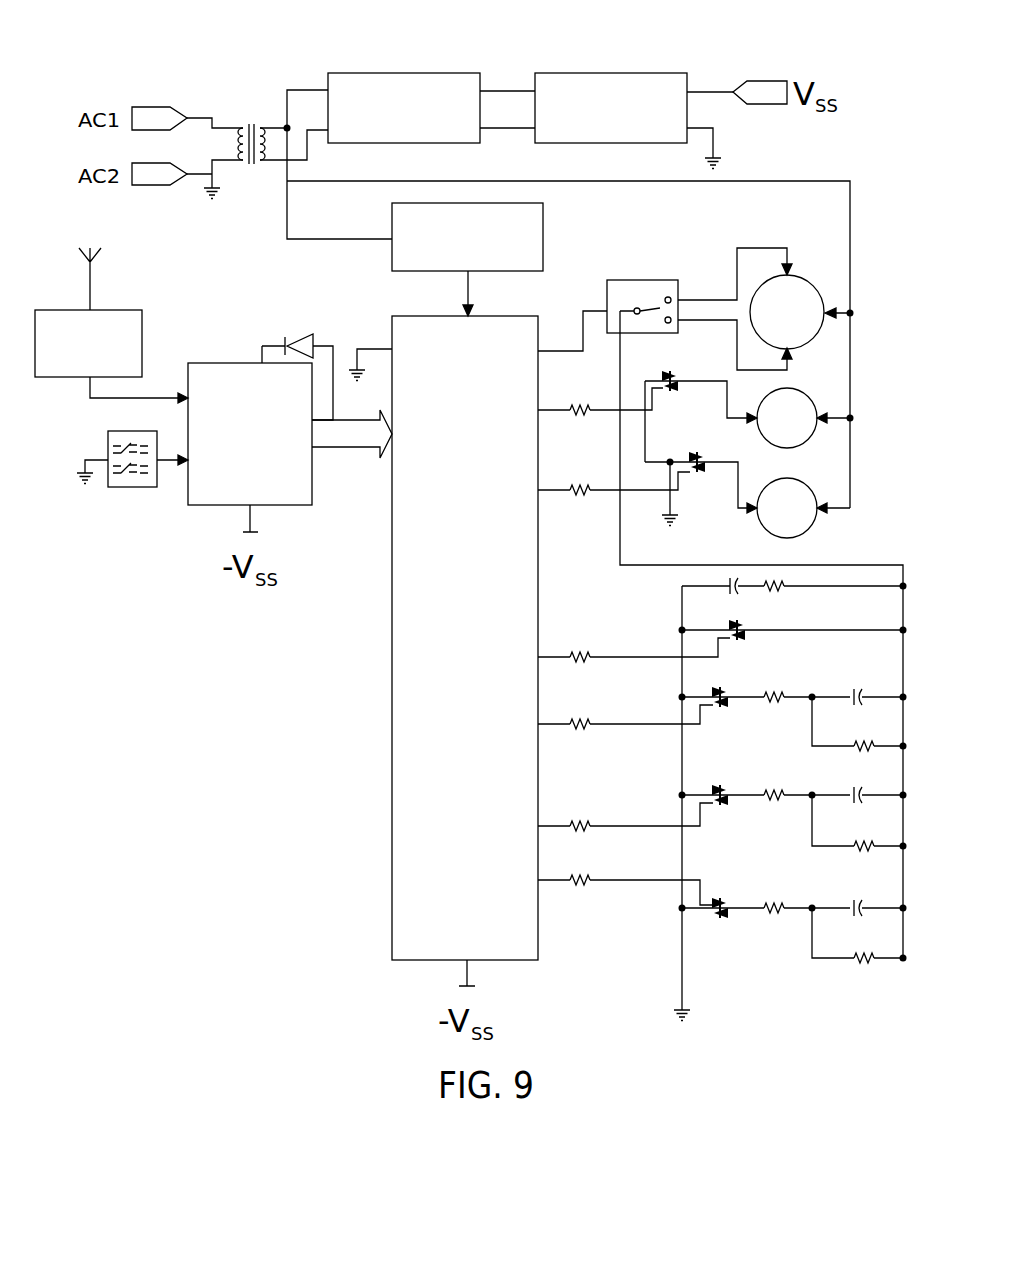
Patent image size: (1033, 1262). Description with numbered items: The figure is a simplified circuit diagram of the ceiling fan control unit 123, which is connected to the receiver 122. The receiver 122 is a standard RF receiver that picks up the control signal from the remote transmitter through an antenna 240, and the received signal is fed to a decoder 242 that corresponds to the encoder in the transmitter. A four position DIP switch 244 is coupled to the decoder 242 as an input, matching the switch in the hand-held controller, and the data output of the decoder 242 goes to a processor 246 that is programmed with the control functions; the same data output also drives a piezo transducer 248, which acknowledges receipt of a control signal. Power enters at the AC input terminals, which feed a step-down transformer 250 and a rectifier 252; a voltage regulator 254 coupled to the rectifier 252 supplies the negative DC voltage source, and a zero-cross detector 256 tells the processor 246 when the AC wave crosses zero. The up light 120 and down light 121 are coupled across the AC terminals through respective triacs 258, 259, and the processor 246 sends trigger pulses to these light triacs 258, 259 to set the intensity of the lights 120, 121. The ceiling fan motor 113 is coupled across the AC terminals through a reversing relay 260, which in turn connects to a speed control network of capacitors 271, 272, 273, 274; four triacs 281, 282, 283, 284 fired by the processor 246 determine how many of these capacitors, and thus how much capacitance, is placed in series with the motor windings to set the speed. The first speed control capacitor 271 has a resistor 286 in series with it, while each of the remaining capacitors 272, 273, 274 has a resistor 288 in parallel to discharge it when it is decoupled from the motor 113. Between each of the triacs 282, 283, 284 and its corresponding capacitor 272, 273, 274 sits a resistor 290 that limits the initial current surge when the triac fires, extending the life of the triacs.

The control unit 123 is at (755, 48).
The step-down transformer 250 is at (248, 128).
The rectifier 252 is at (373, 73).
The voltage regulator 254 is at (630, 73).
The zero-cross detector 256 is at (545, 226).
The antenna 240 is at (93, 283).
The receiver 122 is at (143, 337).
The piezo transducer 248 is at (303, 338).
The decoder 242 is at (303, 501).
The four position DIP switch 244 is at (130, 487).
The processor 246 is at (523, 950).
The reversing relay 260 is at (635, 280).
The ceiling fan motor 113 is at (810, 288).
The triac 258 is at (666, 374).
The triac 259 is at (712, 435).
The up light 120 is at (808, 395).
The down light 121 is at (803, 533).
The speed control capacitor 271 is at (737, 593).
The resistor 286 is at (790, 590).
The triac 281 is at (745, 638).
The triac 282 is at (724, 689).
The triac 283 is at (720, 788).
The triac 284 is at (722, 903).
The speed control capacitor 272 is at (860, 690).
The speed control capacitor 273 is at (860, 788).
The speed control capacitor 274 is at (863, 872).
The resistor 290 is at (776, 703).
The resistor 288 is at (868, 742).